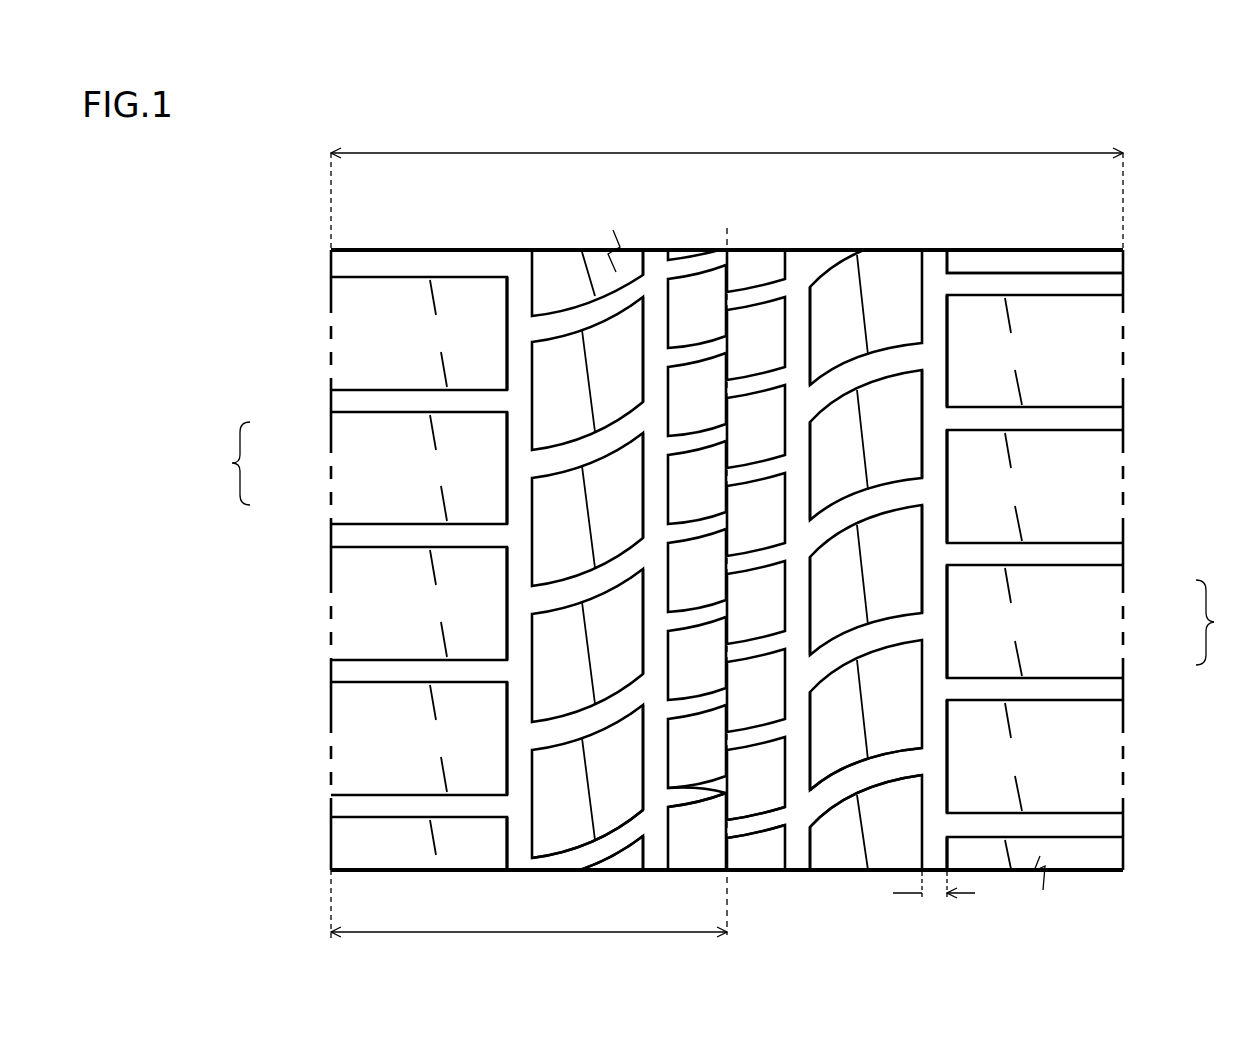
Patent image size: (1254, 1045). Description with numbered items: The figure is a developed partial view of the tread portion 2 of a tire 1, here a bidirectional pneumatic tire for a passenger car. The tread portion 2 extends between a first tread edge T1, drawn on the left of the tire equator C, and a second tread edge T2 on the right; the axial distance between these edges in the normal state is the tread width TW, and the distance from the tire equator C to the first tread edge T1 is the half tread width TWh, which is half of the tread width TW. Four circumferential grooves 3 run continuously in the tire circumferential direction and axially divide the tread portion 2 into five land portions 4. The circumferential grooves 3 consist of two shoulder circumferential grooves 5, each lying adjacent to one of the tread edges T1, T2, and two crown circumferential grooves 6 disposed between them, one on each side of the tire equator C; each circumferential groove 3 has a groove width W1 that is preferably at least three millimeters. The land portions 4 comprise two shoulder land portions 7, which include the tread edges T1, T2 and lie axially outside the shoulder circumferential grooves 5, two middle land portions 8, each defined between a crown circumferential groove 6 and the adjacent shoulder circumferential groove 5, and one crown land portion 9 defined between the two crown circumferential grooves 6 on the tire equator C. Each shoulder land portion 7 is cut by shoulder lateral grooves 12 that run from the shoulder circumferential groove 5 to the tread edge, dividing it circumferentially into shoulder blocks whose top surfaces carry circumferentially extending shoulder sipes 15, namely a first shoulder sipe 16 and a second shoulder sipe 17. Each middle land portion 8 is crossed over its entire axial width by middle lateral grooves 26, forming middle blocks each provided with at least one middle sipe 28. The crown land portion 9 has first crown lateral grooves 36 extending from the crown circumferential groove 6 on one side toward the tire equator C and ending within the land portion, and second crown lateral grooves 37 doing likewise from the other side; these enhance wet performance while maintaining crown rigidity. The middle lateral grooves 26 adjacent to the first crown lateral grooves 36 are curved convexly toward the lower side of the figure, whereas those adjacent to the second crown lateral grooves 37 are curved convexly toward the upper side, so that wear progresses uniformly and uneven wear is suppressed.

The tire 1 is at (441, 222).
The tread portion 2 is at (895, 223).
The circumferential grooves 3 is at (935, 522).
The land portions 4 is at (1083, 318).
The shoulder circumferential grooves 5 is at (526, 292).
The crown circumferential grooves 6 is at (655, 282).
The shoulder land portions 7 is at (388, 316).
The middle land portions 8 is at (577, 283).
The crown land portion 9 is at (706, 302).
The shoulder lateral grooves 12 is at (395, 407).
The shoulder sipes 15 is at (725, 574).
The first shoulder sipe 16 is at (445, 512).
The second shoulder sipe 17 is at (432, 427).
The middle lateral grooves 26 is at (566, 592).
The middle sipe 28 is at (584, 788).
The first crown lateral grooves 36 is at (685, 798).
The second crown lateral grooves 37 is at (746, 840).
The tire equator C is at (728, 563).
The first tread edge T1 is at (328, 292).
The second tread edge T2 is at (1128, 300).
The tread width TW is at (727, 182).
The half tread width TWh is at (529, 919).
The groove width W1 is at (934, 902).